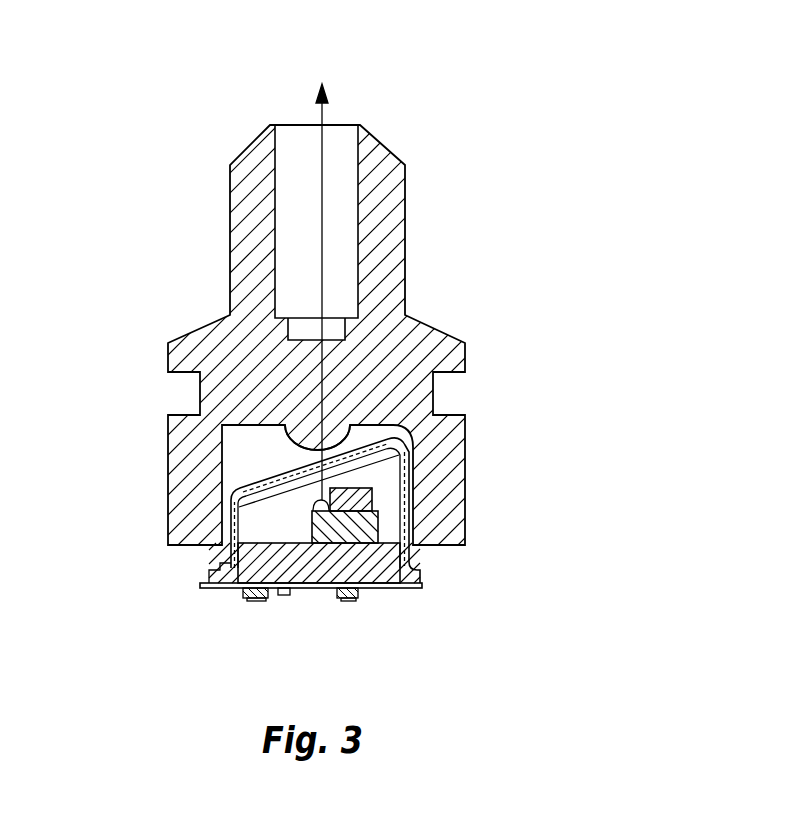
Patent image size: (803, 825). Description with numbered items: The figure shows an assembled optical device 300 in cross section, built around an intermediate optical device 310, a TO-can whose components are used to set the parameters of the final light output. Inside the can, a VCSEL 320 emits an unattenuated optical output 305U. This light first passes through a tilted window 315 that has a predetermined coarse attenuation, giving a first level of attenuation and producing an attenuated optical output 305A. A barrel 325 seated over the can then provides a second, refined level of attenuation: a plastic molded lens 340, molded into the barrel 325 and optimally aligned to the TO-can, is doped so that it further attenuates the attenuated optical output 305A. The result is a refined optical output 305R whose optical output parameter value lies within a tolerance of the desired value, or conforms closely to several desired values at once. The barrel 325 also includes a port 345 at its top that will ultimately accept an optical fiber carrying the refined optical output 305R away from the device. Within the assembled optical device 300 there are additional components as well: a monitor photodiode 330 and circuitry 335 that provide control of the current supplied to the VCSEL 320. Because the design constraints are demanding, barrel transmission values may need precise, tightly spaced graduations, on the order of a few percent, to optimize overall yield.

The assembled optical device 300 is at (324, 368).
The refined optical output 305R is at (325, 113).
The attenuated optical output 305A is at (318, 455).
The unattenuated optical output 305U is at (205, 545).
The intermediate optical device 310 is at (412, 464).
The tilted window 315 is at (283, 475).
The VCSEL 320 is at (313, 505).
The barrel 325 is at (393, 217).
The monitor photodiode 330 is at (365, 488).
The circuitry 335 is at (403, 588).
The plastic molded lens 340 is at (327, 439).
The port 345 is at (276, 157).